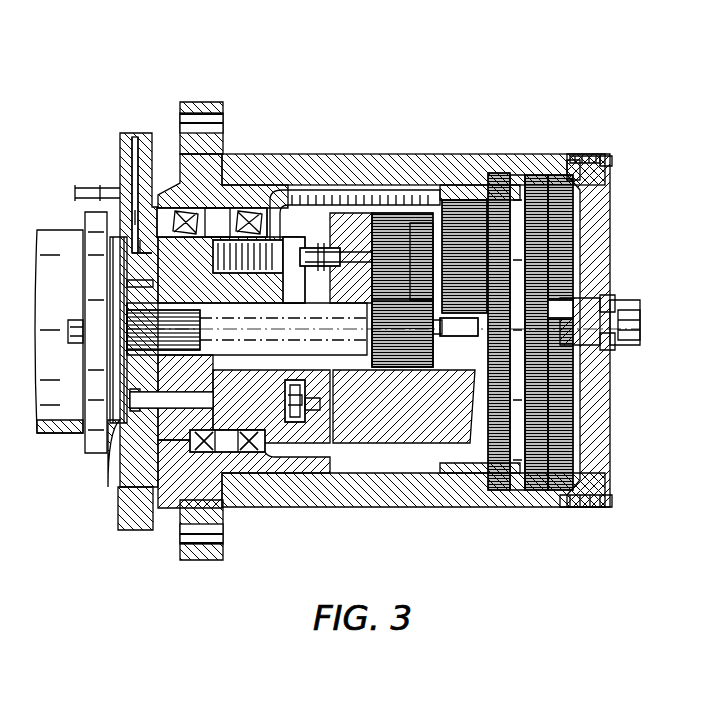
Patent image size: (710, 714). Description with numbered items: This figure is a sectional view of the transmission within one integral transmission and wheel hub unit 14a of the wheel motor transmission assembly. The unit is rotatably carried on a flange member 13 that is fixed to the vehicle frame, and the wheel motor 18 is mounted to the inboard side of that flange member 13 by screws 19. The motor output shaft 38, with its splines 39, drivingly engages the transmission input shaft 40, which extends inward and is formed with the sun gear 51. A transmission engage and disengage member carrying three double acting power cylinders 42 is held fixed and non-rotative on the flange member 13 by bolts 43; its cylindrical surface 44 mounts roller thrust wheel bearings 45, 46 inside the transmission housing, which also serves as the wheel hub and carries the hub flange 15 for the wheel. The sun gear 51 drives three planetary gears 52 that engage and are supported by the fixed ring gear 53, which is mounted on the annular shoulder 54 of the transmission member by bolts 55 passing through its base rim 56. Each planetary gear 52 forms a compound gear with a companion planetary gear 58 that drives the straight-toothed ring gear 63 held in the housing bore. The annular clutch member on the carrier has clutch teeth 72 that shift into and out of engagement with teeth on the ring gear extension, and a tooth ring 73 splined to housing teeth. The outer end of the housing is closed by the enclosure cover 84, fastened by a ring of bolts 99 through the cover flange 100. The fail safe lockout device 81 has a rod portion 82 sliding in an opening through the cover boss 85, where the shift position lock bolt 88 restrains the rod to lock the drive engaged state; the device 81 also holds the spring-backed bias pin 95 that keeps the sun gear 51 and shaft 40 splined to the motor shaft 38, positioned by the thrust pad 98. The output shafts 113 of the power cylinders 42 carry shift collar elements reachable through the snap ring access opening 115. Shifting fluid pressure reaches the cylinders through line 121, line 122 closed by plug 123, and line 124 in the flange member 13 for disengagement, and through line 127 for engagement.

The integral transmission and wheel hub unit 14a is at (512, 80).
The hub flange 15 is at (220, 102).
The flange member 13 is at (130, 530).
The plug 123 is at (136, 135).
The line 121 is at (120, 192).
The line 122 is at (135, 217).
The line 124 is at (152, 250).
The line 127 is at (140, 284).
The wheel motor 18 is at (55, 435).
The screw 19 is at (68, 331).
The splines 39 is at (125, 340).
The bolt 43 is at (130, 400).
The power cylinder 42 is at (235, 247).
The base rim 56 is at (360, 215).
The annular shoulder 54 is at (343, 195).
The transmission input shaft 40 is at (312, 343).
The thrust pad 98 is at (210, 333).
The output shaft 38 is at (123, 306).
The roller thrust wheel bearing 45 is at (250, 447).
The roller thrust wheel bearing 46 is at (200, 447).
The cylindrical surface 44 is at (232, 447).
The output shaft 113 is at (290, 400).
The snap ring access opening 115 is at (330, 405).
The fail safe lockout device 81 is at (470, 343).
The bias pin 95 is at (437, 336).
The ring gear 53 is at (390, 210).
The bolt 55 is at (417, 233).
The sun gear 51 is at (395, 367).
The planetary gear 52 is at (462, 213).
The companion planetary gear 58 is at (483, 183).
The clutch teeth 72 is at (500, 460).
The tooth ring 73 is at (535, 470).
The ring gear 63 is at (560, 160).
The transmission outer end enclosure cover 84 is at (600, 240).
The cover flange 100 is at (590, 157).
The bolt 99 is at (605, 165).
The rod portion 82 is at (598, 300).
The shift position lock bolt 88 is at (620, 305).
The cover boss 85 is at (628, 347).